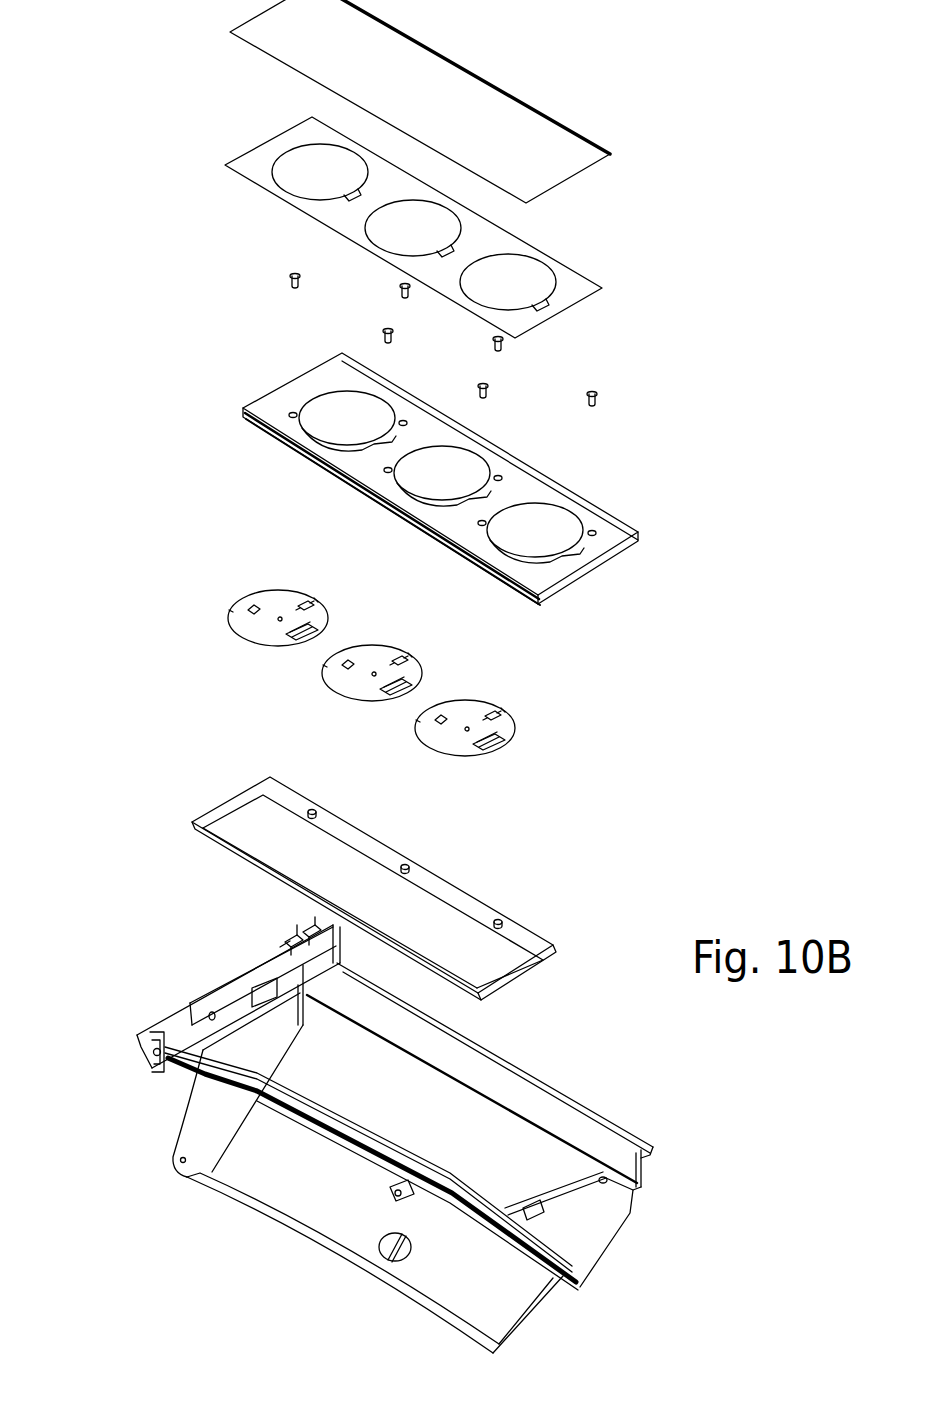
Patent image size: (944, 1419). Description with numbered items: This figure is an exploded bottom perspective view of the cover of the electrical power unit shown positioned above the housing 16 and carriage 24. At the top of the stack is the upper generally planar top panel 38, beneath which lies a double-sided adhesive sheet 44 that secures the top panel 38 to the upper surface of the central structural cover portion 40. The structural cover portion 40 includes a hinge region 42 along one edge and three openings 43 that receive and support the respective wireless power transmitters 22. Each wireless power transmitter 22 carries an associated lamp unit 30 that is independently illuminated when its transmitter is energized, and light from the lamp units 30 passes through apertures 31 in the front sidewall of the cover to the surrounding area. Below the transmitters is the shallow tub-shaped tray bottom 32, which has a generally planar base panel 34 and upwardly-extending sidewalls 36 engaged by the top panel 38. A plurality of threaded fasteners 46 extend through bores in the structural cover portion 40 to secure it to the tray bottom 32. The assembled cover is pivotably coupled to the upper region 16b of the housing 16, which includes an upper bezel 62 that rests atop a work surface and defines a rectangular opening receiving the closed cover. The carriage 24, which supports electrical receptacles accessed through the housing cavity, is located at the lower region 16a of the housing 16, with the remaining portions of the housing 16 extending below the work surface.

The top panel 38 is at (527, 98).
The double-sided adhesive sheet 44 is at (553, 256).
The threaded fasteners 46 is at (290, 266).
The structural cover portion 40 is at (393, 472).
The hinge region 42 is at (266, 440).
The openings 43 is at (333, 424).
The wireless power transmitters 22 is at (380, 689).
The lamp unit 30 is at (324, 600).
The tray bottom 32 is at (368, 853).
The base panel 34 is at (285, 862).
The sidewalls 36 is at (215, 810).
The apertures 31 is at (321, 810).
The housing 16 is at (396, 1135).
The lower region of housing 16a is at (642, 1252).
The upper region of housing 16b is at (191, 994).
The upper bezel 62 is at (200, 995).
The carriage 24 is at (195, 1140).